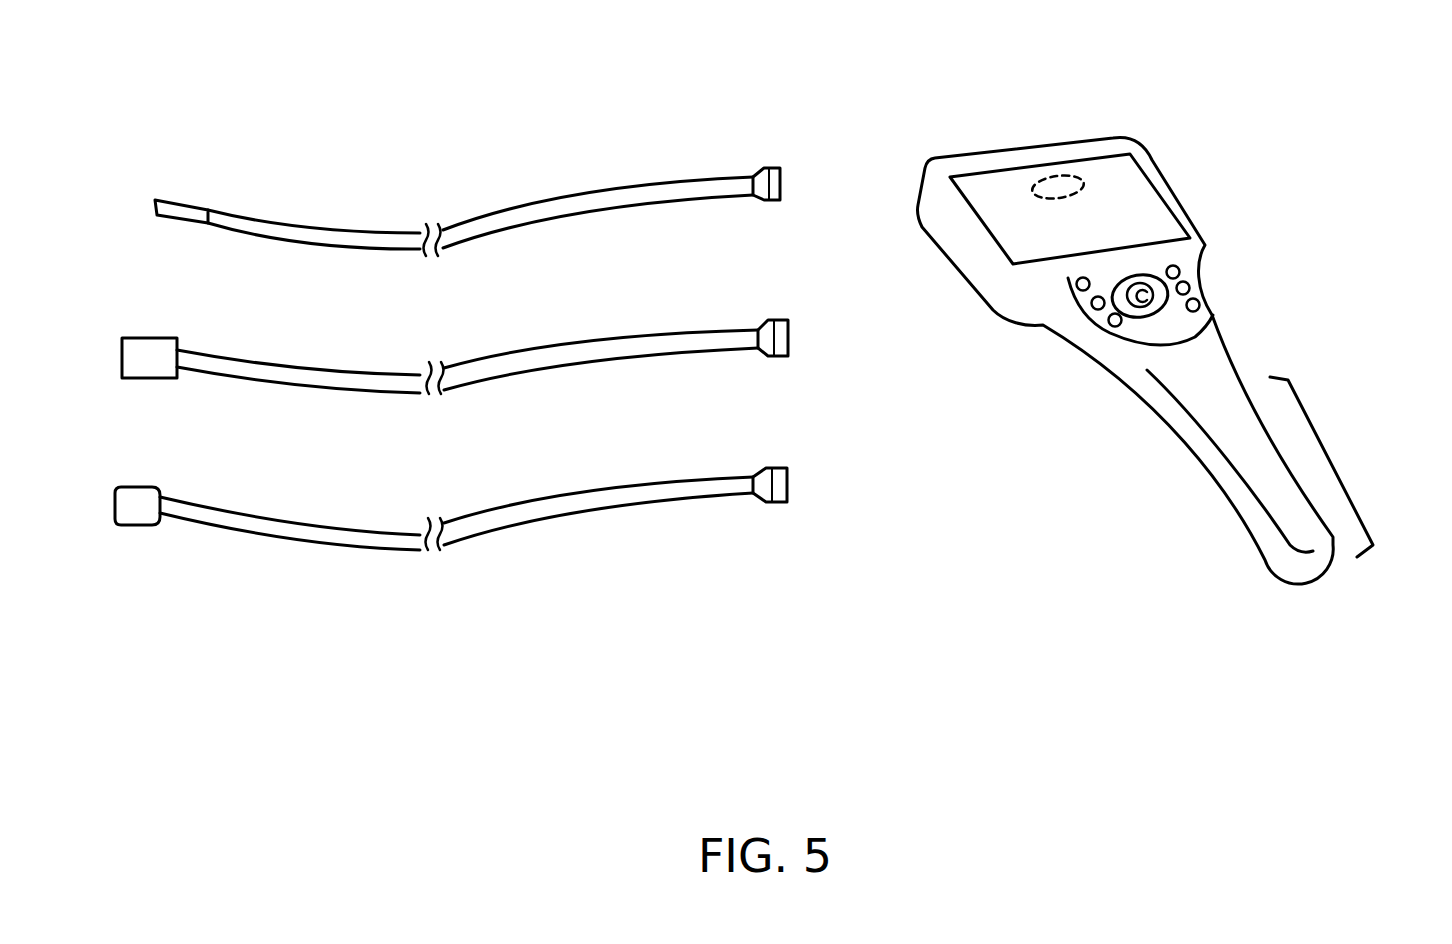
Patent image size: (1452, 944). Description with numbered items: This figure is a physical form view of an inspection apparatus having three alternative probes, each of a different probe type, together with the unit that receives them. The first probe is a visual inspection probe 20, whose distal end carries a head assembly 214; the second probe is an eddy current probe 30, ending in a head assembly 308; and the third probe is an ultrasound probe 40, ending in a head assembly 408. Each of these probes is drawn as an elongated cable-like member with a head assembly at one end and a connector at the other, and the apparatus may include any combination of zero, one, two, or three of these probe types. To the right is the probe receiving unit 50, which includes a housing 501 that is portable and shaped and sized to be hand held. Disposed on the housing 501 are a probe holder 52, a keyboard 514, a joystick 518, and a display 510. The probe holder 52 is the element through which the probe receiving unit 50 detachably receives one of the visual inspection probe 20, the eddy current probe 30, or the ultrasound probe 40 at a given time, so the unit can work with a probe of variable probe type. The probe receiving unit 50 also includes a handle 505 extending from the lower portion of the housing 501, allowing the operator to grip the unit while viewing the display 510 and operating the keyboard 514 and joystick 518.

The visual inspection probe 20 is at (583, 172).
The head assembly 214 is at (170, 198).
The eddy current probe 30 is at (608, 313).
The head assembly 308 is at (133, 338).
The ultrasound probe 40 is at (607, 466).
The head assembly 408 is at (128, 525).
The probe receiving unit 50 is at (1178, 312).
The probe holder 52 is at (1045, 178).
The display 510 is at (1140, 198).
The housing 501 is at (1193, 250).
The joystick 518 is at (1147, 297).
The keyboard 514 is at (1087, 304).
The handle 505 is at (1333, 460).